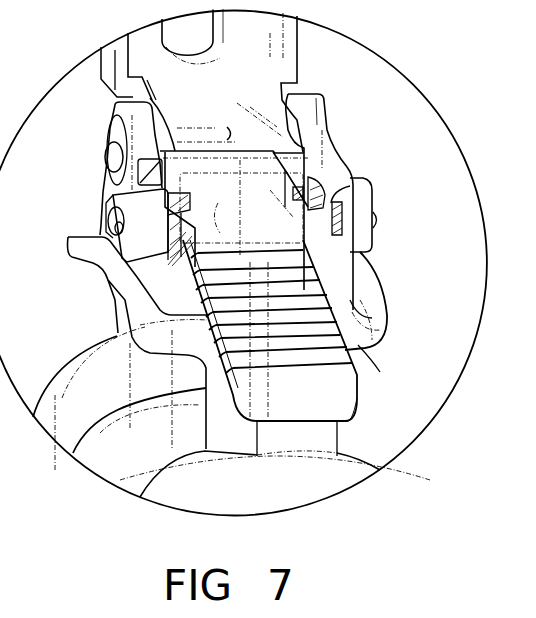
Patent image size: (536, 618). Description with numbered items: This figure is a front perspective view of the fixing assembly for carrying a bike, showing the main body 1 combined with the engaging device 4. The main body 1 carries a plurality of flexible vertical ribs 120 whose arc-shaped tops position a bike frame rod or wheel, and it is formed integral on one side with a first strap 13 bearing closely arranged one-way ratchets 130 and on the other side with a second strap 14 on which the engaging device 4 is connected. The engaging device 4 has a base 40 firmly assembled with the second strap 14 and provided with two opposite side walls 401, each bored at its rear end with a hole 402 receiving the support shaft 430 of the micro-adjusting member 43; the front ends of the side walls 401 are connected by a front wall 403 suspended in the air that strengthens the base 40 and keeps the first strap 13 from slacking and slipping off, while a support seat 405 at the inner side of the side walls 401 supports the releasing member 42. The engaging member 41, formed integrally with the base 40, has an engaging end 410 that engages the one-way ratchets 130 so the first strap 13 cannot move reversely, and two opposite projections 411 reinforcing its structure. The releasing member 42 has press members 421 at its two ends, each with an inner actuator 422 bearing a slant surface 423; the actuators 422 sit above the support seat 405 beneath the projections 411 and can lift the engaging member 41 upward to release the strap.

The main body 1 is at (54, 353).
The engaging device 4 is at (346, 132).
The first strap 13 is at (348, 406).
The second strap 14 is at (385, 340).
The base 40 is at (185, 285).
The engaging member 41 is at (231, 150).
The releasing member 42 is at (107, 222).
The micro-adjusting member 43 is at (263, 43).
The vertical ribs 120 is at (157, 503).
The one-way ratchets 130 is at (313, 345).
The side walls 401 is at (143, 123).
The hole 402 is at (110, 133).
The front wall 403 is at (370, 207).
The support seat 405 is at (425, 310).
The engaging end 410 is at (275, 331).
The projections 411 is at (188, 150).
The press member 421 is at (112, 207).
The actuator 422 is at (393, 392).
The slant surface 423 is at (103, 187).
The support shaft 430 is at (108, 155).